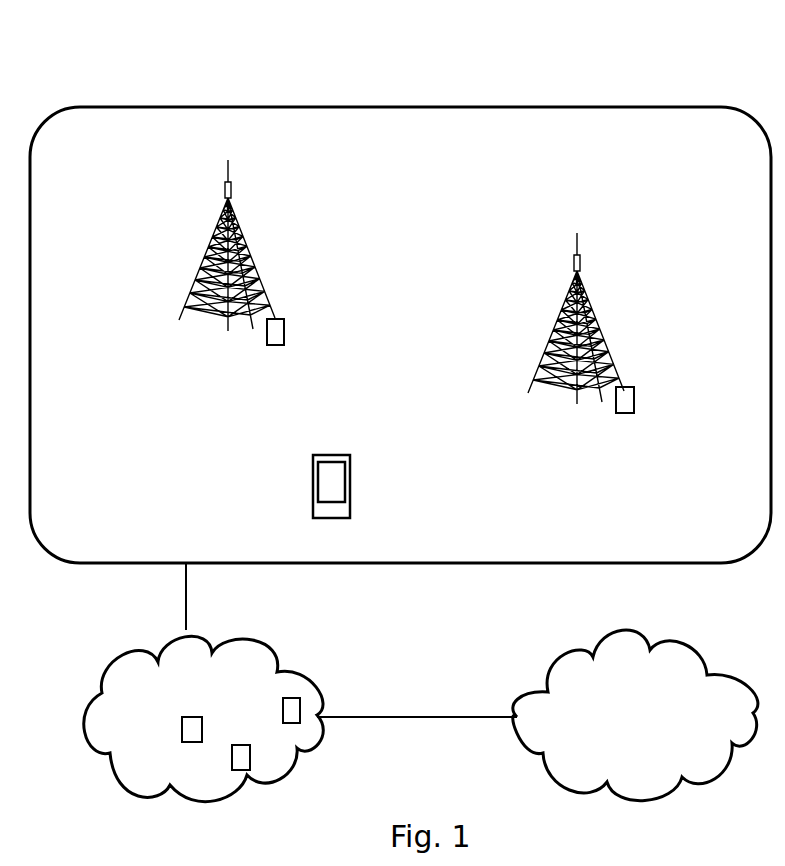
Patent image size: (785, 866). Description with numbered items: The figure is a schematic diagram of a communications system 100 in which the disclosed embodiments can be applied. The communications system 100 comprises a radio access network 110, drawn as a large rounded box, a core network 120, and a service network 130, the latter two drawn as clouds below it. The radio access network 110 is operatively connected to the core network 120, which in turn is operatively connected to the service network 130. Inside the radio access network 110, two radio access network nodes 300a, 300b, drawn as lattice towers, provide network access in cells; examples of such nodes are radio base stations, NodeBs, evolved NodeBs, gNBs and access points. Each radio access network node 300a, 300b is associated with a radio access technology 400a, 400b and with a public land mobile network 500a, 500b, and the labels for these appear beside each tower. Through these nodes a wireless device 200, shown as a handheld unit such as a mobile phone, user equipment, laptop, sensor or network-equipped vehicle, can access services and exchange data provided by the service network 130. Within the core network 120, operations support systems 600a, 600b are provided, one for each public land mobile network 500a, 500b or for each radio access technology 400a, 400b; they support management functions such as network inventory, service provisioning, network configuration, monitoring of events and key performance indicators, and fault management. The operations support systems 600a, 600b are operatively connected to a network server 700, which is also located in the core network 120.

The communications system 100 is at (116, 70).
The radio access network 110 is at (736, 151).
The core network 120 is at (188, 689).
The service network 130 is at (663, 729).
The wireless device 200 is at (351, 490).
The radio access network node 300a is at (284, 332).
The radio access network node 300b is at (634, 401).
The radio access technology 400a is at (202, 273).
The radio access technology 400b is at (553, 345).
The public land mobile network 500a is at (195, 384).
The public land mobile network 500b is at (548, 456).
The operations support system 600a is at (283, 709).
The operations support system 600b is at (232, 760).
The network server 700 is at (181, 731).